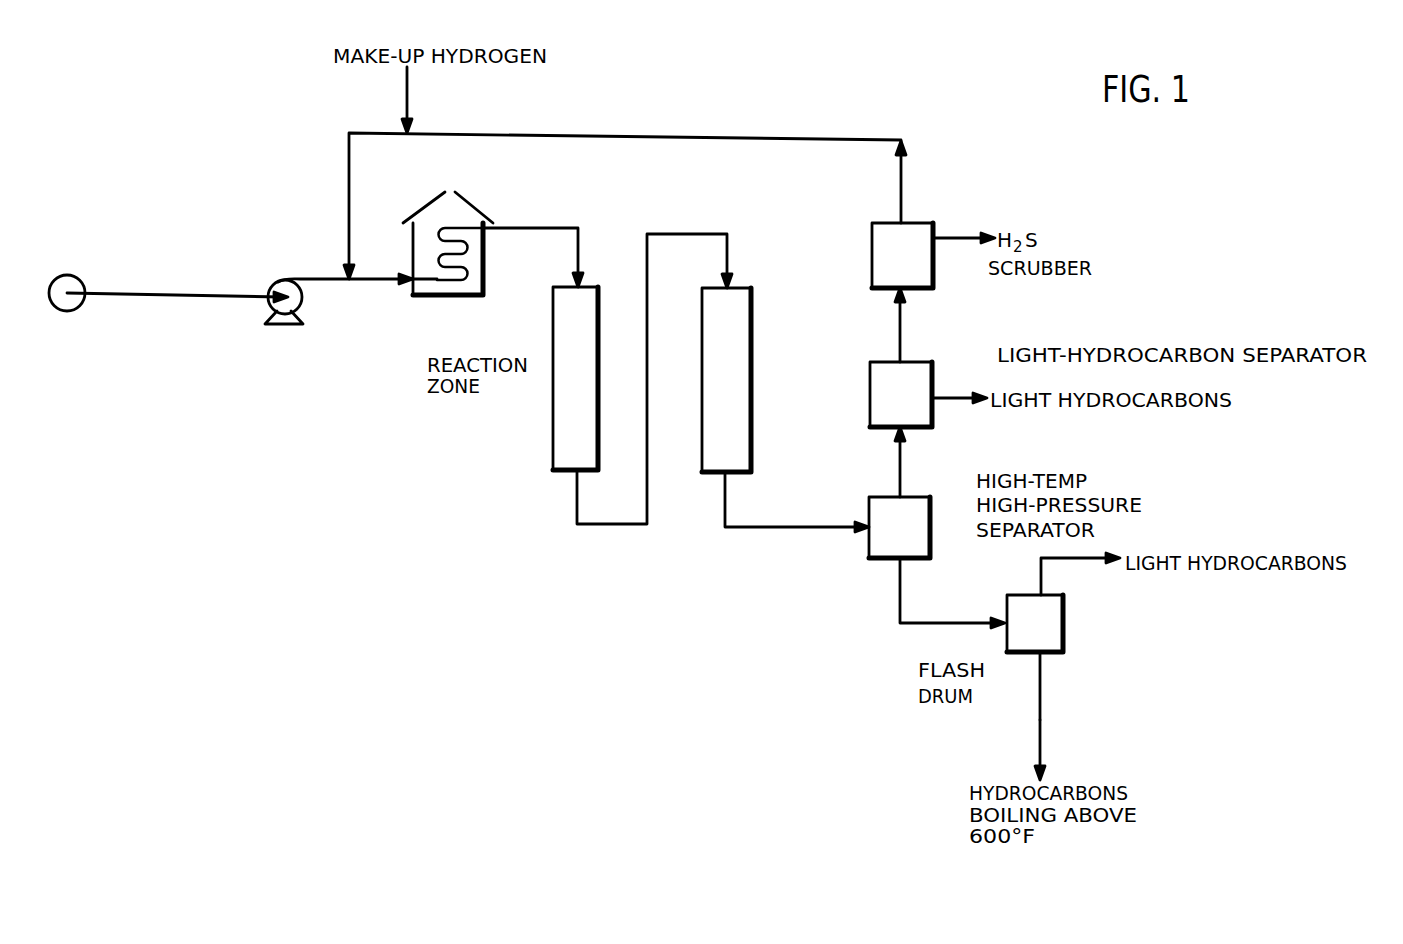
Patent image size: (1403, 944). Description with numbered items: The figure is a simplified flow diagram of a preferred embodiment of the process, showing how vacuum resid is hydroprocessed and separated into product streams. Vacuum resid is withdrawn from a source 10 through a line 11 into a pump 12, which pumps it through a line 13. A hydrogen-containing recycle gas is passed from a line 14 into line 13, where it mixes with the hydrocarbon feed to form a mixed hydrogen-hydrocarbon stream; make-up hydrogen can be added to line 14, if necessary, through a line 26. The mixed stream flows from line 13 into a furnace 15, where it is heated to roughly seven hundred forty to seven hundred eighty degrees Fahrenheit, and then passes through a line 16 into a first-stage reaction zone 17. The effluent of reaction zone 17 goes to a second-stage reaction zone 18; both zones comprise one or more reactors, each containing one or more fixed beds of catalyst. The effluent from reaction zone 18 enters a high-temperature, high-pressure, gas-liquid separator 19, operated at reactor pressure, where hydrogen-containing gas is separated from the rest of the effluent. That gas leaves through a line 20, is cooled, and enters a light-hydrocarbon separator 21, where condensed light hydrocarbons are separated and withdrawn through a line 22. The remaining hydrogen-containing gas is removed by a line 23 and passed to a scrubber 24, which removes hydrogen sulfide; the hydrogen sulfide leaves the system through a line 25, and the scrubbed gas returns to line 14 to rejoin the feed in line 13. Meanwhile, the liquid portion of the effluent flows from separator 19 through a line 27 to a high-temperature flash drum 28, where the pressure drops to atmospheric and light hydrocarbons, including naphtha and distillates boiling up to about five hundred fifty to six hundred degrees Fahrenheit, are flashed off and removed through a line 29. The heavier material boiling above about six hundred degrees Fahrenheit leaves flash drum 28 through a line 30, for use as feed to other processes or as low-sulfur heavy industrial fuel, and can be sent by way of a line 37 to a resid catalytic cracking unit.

The source 10 is at (79, 283).
The line 11 is at (173, 296).
The pump 12 is at (271, 307).
The line 13 is at (332, 280).
The line 14 is at (349, 150).
The furnace 15 is at (447, 296).
The line 16 is at (547, 228).
The first-stage reaction zone 17 is at (553, 413).
The second-stage reaction zone 18 is at (702, 384).
The high-temperature, high-pressure, gas-liquid separator 19 is at (912, 560).
The line 20 is at (900, 457).
The light-hydrocarbon separator 21 is at (870, 386).
The line 22 is at (953, 398).
The line 23 is at (900, 323).
The scrubber 24 is at (888, 223).
The line 25 is at (950, 238).
The line 26 is at (407, 91).
The line 27 is at (898, 588).
The high-temperature flash drum 28 is at (1063, 617).
The line 29 is at (1069, 558).
The line 30 is at (1040, 686).
The line 37 is at (1040, 735).